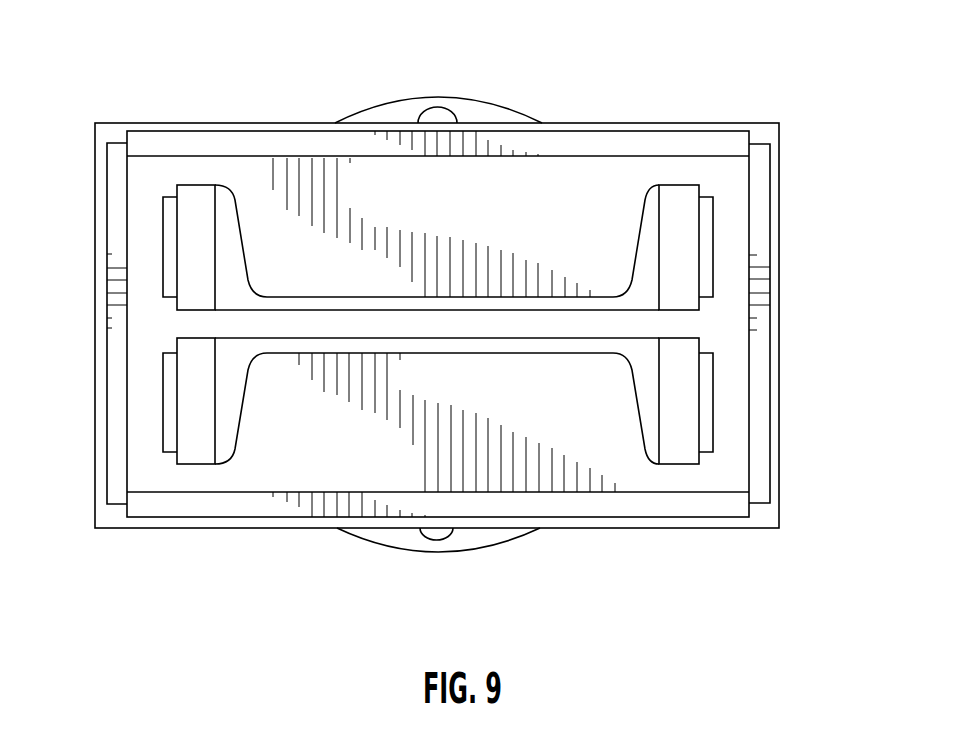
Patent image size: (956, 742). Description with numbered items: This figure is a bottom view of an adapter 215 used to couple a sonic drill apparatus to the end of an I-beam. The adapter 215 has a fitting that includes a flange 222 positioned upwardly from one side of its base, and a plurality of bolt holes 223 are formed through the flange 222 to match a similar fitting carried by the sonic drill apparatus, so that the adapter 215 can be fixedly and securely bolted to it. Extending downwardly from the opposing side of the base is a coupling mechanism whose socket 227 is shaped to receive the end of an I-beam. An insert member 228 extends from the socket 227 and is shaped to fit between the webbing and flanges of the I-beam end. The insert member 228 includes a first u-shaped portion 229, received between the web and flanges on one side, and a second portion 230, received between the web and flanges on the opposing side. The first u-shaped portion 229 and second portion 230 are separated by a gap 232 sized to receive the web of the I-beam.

The adapter 215 is at (932, 278).
The flange 222 is at (383, 107).
The bolt holes 223 is at (438, 526).
The socket 227 is at (615, 145).
The insert member 228 is at (672, 387).
The first u-shaped portion 229 is at (683, 226).
The second portion 230 is at (705, 410).
The gap 232 is at (197, 323).